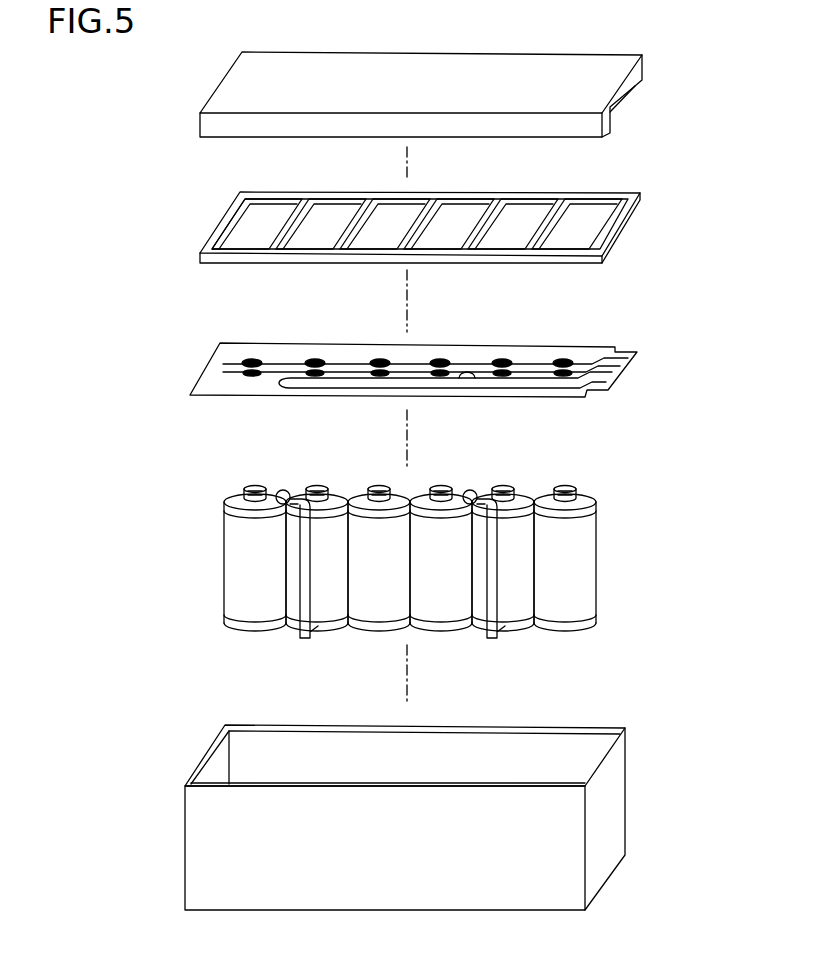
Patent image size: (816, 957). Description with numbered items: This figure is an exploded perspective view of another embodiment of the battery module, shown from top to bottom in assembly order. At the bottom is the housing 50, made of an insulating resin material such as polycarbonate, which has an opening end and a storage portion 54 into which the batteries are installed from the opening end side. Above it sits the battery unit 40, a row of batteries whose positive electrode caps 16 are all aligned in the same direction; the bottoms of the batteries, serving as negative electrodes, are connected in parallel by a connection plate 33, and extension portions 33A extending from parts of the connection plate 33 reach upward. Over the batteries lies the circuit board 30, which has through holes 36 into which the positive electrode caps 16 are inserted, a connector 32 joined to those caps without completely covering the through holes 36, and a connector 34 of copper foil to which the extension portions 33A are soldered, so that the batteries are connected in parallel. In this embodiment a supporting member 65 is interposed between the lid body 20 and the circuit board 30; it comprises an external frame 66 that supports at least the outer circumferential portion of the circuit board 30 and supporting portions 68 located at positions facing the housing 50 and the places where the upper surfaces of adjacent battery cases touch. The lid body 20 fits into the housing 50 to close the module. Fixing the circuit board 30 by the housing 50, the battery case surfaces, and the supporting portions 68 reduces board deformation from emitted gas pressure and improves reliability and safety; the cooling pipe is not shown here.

The lid body 20 is at (568, 78).
The supporting member 65 is at (470, 211).
The external frame 66 is at (597, 193).
The supporting portions 68 is at (547, 232).
The circuit board 30 is at (454, 348).
The connector 32 is at (471, 338).
The connector 34 is at (622, 375).
The through holes 36 is at (566, 360).
The battery unit 40 is at (453, 555).
The positive electrode caps 16 is at (572, 493).
The connection plate 33 is at (450, 555).
The extension portions 33A is at (493, 538).
The storage portion 54 is at (518, 753).
The housing 50 is at (445, 797).